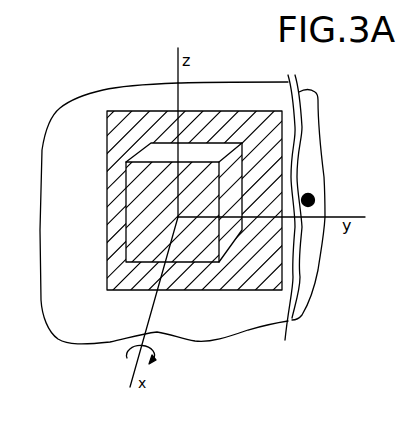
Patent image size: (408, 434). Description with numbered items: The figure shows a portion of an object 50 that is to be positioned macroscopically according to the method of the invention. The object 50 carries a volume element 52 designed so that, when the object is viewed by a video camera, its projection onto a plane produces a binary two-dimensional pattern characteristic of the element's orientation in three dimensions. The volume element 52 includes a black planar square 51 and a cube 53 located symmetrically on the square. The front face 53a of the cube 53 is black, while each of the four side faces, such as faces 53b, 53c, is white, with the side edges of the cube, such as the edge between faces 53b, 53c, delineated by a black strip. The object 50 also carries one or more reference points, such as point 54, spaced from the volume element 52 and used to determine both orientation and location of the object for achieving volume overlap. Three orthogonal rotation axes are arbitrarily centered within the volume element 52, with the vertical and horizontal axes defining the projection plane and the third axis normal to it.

The object 50 is at (323, 83).
The black planar square 51 is at (176, 216).
The volume element 52 is at (233, 280).
The cube 53 is at (201, 173).
The front face 53a is at (135, 180).
The side face 53b is at (203, 155).
The side face 53c is at (230, 190).
The reference point 54 is at (315, 196).